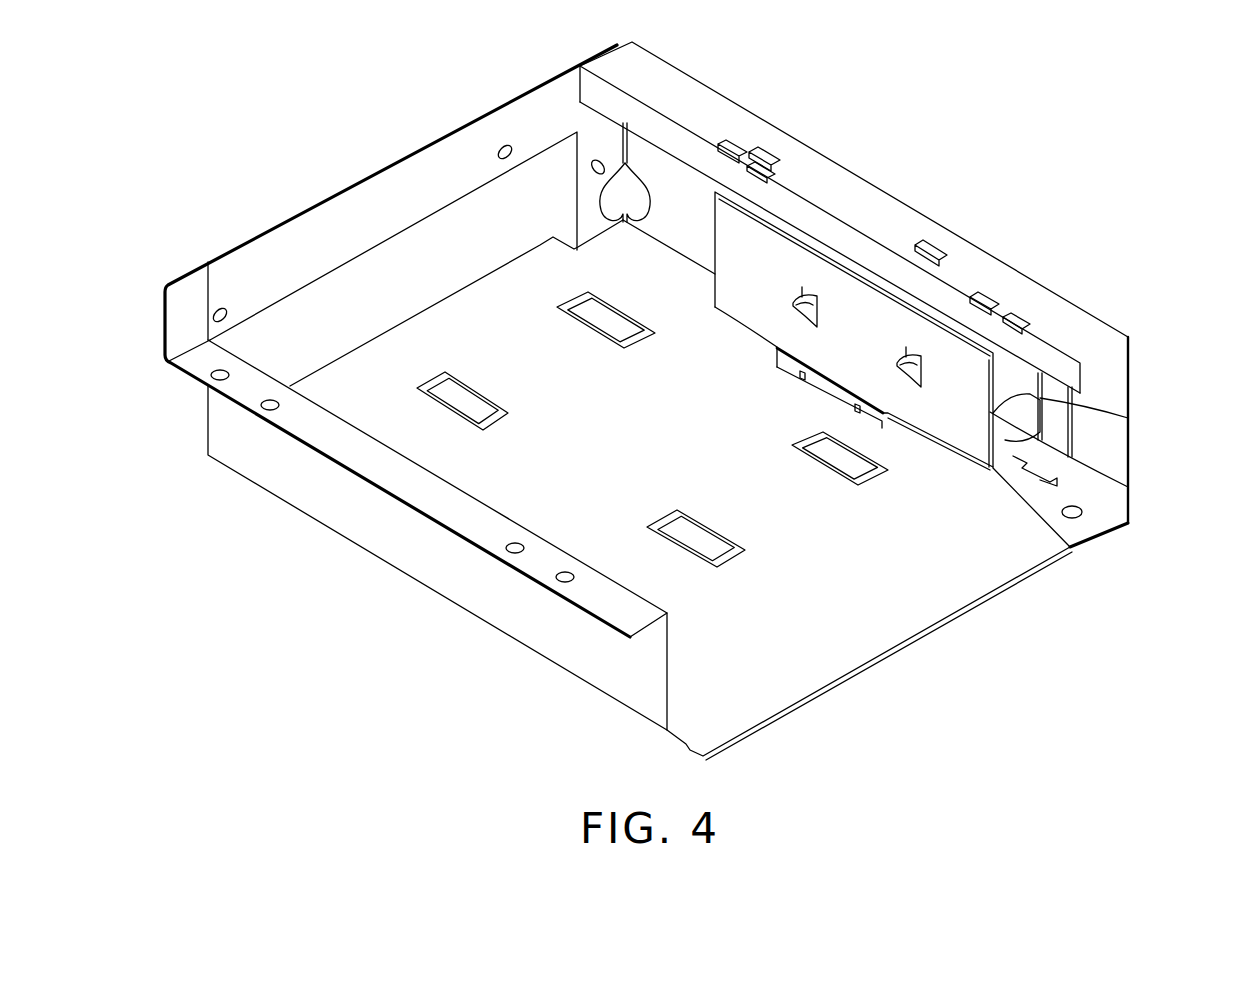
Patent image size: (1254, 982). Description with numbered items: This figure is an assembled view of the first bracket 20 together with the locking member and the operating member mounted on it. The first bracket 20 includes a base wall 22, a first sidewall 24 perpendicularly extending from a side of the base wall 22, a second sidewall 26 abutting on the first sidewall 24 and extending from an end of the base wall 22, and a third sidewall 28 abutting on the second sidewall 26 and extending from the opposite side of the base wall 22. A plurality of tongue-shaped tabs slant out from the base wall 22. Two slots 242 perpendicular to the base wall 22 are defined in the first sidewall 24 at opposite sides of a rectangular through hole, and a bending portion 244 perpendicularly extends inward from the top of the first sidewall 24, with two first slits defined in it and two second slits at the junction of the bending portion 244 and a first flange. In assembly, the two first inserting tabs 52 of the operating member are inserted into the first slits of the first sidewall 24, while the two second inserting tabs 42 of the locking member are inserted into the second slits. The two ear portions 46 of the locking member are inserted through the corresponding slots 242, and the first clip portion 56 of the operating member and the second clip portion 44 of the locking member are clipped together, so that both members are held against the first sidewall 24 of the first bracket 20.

The first bracket 20 is at (456, 585).
The base wall 22 is at (933, 582).
The first sidewall 24 is at (1107, 443).
The second sidewall 26 is at (417, 170).
The third sidewall 28 is at (262, 467).
The second inserting tabs 42 is at (733, 143).
The second clip portion 44 is at (1097, 537).
The ear portions 46 is at (1128, 484).
The first inserting tabs 52 is at (764, 158).
The first clip portion 56 is at (793, 363).
The slots 242 is at (1107, 411).
The bending portion 244 is at (1065, 313).